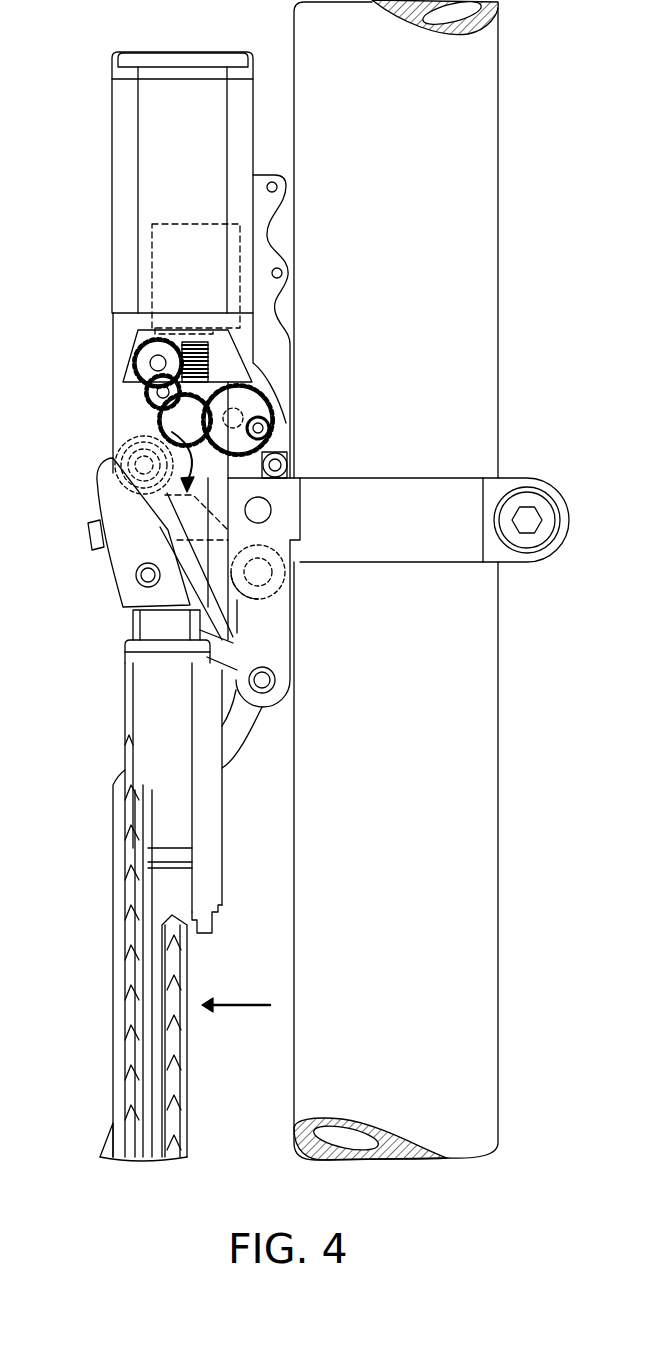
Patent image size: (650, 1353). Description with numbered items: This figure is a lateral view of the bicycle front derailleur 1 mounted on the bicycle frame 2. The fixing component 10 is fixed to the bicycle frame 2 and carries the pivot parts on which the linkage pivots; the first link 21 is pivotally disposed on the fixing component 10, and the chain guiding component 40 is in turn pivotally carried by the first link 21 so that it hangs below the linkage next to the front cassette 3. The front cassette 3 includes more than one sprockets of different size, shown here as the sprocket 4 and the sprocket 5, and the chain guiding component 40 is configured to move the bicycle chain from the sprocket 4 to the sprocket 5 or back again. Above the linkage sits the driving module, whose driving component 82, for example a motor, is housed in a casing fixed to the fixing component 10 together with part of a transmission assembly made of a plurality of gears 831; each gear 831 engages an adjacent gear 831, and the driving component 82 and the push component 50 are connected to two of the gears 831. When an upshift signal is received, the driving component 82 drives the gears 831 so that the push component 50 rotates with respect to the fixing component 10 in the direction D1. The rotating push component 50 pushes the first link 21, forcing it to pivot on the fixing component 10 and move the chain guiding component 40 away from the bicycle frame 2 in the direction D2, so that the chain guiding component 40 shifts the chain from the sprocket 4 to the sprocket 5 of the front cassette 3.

The bicycle front derailleur 1 is at (74, 102).
The bicycle frame 2 is at (492, 246).
The front cassette 3 is at (147, 1182).
The sprocket 4 is at (180, 1082).
The sprocket 5 is at (130, 1066).
The fixing component 10 is at (278, 523).
The first link 21 is at (128, 528).
The chain guiding component 40 is at (128, 695).
The push component 50 is at (147, 413).
The driving component 82 is at (160, 252).
The gears 831 is at (145, 358).
The direction D1 is at (172, 432).
The direction D2 is at (236, 993).